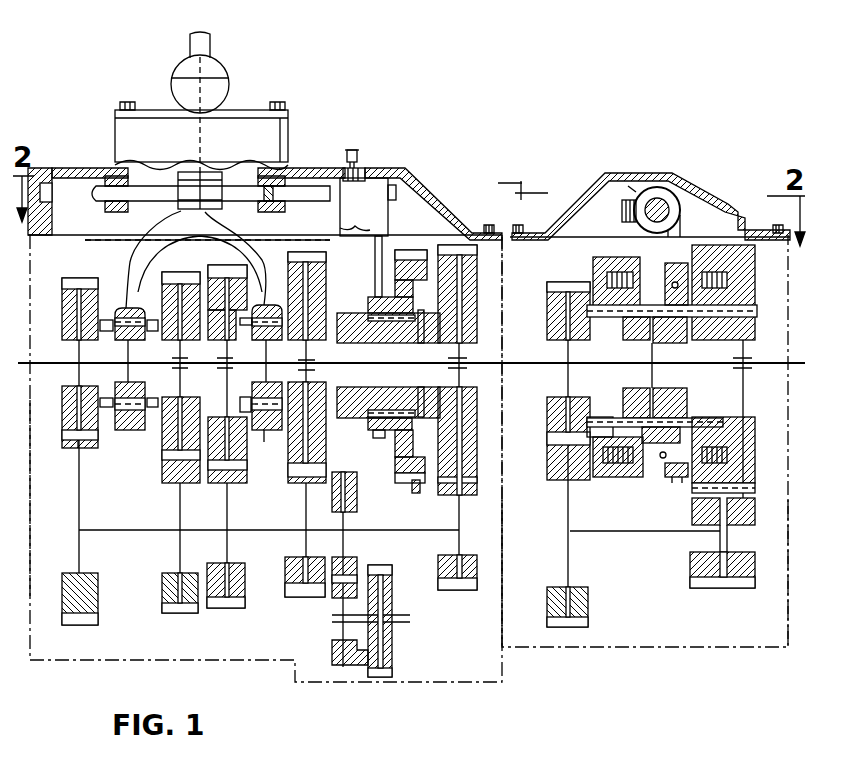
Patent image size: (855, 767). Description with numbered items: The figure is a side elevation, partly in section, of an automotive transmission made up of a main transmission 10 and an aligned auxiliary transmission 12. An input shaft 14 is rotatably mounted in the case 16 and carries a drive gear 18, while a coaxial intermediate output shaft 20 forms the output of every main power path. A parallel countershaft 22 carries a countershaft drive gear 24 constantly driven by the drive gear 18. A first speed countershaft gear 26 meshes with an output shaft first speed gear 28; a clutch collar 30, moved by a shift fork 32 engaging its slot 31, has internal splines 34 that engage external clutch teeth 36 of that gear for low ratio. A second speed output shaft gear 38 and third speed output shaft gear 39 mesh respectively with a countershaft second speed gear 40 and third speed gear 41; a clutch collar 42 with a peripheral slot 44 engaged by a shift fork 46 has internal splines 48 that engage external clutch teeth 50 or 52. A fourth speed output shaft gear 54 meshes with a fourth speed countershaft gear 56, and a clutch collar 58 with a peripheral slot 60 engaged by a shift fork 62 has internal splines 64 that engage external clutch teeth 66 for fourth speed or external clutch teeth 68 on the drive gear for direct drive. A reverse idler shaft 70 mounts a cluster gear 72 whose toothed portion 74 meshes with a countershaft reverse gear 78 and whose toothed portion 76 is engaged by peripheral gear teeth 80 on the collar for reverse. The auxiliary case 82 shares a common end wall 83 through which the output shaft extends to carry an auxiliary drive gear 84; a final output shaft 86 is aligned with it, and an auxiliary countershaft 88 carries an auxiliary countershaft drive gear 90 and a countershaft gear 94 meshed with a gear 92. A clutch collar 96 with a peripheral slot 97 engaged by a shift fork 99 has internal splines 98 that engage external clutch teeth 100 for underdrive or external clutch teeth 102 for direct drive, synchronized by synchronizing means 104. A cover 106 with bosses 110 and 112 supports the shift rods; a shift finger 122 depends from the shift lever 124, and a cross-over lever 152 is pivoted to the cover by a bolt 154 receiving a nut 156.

The main transmission 10 is at (94, 677).
The auxiliary transmission 12 is at (700, 680).
The input shaft 14 is at (52, 364).
The case 16 is at (30, 555).
The drive gear 18 is at (62, 305).
The intermediate output shaft 20 is at (488, 366).
The countershaft 22 is at (126, 532).
The countershaft drive gear 24 is at (86, 470).
The first speed countershaft gear 26 is at (478, 573).
The output shaft first speed gear 28 is at (470, 455).
The clutch collar 30 is at (405, 462).
The slot 31 is at (378, 436).
The shift fork 32 is at (388, 216).
The internal splines 34 is at (400, 322).
The external clutch teeth 36 is at (422, 408).
The second speed output shaft gear 38 is at (318, 274).
The third speed output shaft gear 39 is at (218, 302).
The countershaft second speed gear 40 is at (290, 566).
The third speed gear 41 is at (233, 487).
The clutch collar 42 is at (262, 420).
The peripheral slot 44 is at (266, 440).
The shift fork 46 is at (236, 235).
The internal splines 48 is at (262, 306).
The external clutch teeth 50 is at (297, 405).
The external clutch teeth 52 is at (245, 400).
The fourth speed output shaft gear 54 is at (165, 292).
The fourth speed countershaft gear 56 is at (165, 584).
The clutch collar 58 is at (130, 420).
The peripheral slot 60 is at (136, 430).
The shift fork 62 is at (148, 243).
The internal splines 64 is at (125, 340).
The external clutch teeth 66 is at (152, 332).
The external clutch teeth 68 is at (108, 320).
The reverse idler shaft 70 is at (405, 623).
The cluster gear 72 is at (345, 608).
The toothed portion 74 is at (345, 664).
The toothed portion 76 is at (393, 669).
The countershaft reverse gear 78 is at (350, 500).
The peripheral gear teeth 80 is at (414, 483).
The case 82 is at (790, 594).
The common end wall 83 is at (503, 565).
The auxiliary drive gear 84 is at (548, 302).
The final output shaft 86 is at (770, 365).
The auxiliary countershaft 88 is at (627, 533).
The auxiliary countershaft drive gear 90 is at (588, 605).
The gear 92 is at (755, 272).
The countershaft gear 94 is at (697, 568).
The clutch collar 96 is at (705, 445).
The peripheral slot 97 is at (668, 478).
The internal splines 98 is at (640, 430).
The shift fork 99 is at (672, 232).
The external clutch teeth 100 is at (697, 420).
The external clutch teeth 102 is at (612, 420).
The synchronizing means 104 is at (632, 489).
The cover 106 is at (430, 192).
The boss 110 is at (118, 208).
The boss 112 is at (285, 218).
The shift finger 122 is at (200, 136).
The shift lever 124 is at (211, 42).
The cross-over lever 152 is at (366, 172).
The bolt 154 is at (352, 152).
The nut 156 is at (346, 160).